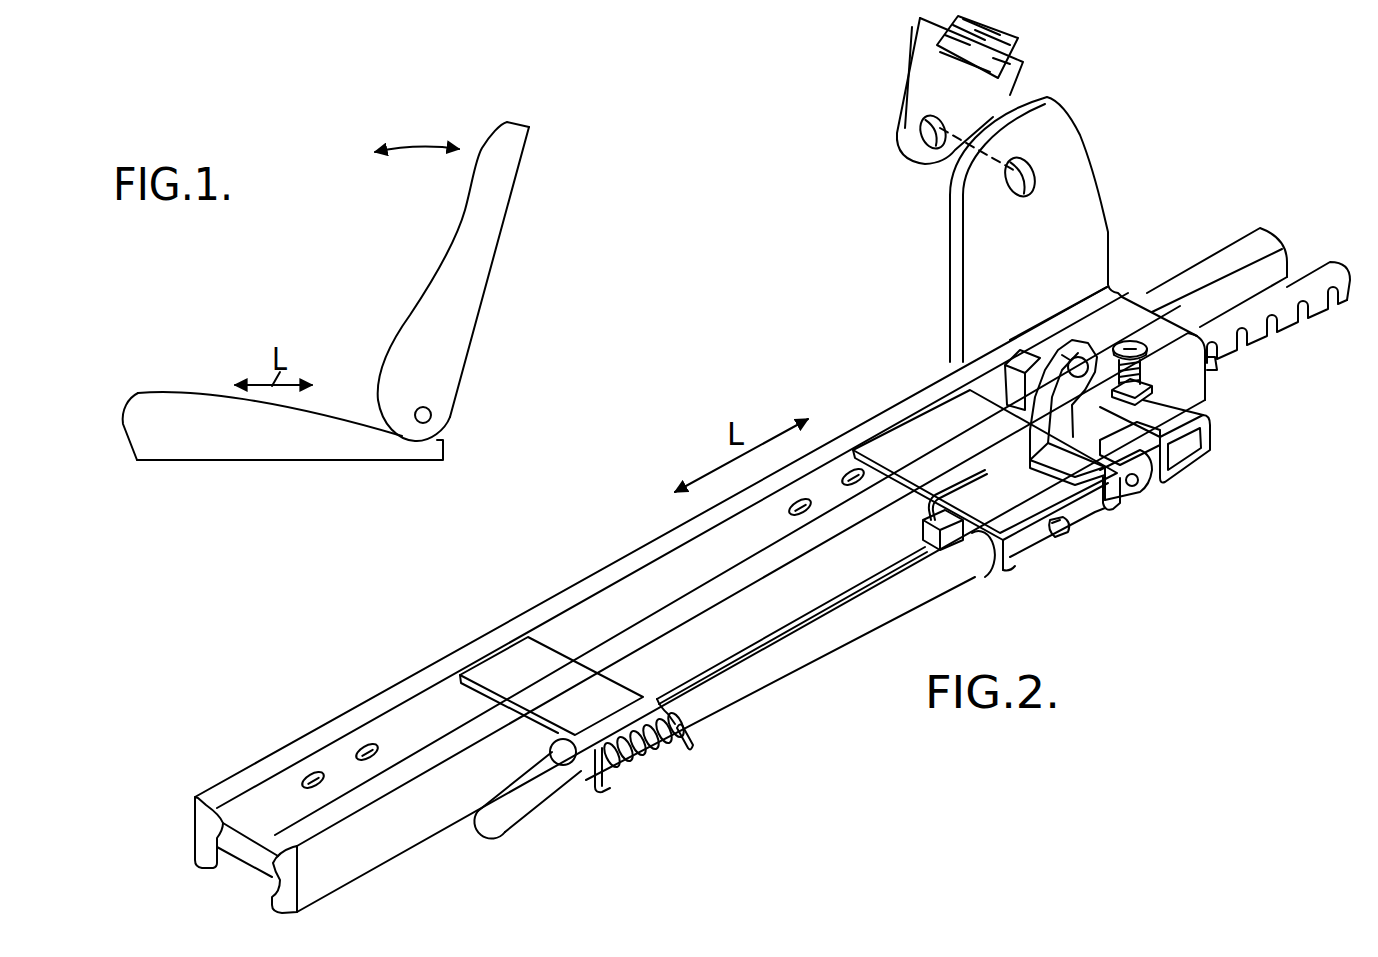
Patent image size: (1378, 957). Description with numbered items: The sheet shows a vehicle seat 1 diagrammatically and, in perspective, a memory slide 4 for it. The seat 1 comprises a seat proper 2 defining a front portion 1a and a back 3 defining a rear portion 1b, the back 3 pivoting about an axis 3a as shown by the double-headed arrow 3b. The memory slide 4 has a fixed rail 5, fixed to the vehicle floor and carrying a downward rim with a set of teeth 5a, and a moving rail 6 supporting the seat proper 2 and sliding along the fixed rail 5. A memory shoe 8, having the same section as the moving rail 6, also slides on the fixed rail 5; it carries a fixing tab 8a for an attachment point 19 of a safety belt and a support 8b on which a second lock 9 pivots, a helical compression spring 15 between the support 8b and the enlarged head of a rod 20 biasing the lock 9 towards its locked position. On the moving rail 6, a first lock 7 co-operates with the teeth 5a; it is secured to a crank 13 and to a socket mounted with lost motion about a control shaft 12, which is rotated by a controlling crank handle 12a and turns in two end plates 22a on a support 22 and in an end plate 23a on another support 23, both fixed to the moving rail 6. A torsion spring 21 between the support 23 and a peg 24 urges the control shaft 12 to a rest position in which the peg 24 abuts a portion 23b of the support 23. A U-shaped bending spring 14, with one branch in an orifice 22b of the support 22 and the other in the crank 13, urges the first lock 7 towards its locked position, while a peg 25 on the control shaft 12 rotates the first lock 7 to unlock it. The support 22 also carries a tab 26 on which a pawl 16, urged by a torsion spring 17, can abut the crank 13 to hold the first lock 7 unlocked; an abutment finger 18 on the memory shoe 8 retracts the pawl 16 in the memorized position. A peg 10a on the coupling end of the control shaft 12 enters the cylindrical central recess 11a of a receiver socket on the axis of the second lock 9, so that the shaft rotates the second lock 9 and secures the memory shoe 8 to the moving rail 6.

In FIG. 1, the vehicle seat 1 is at (331, 307).
In FIG. 1, the front portion of the seat 1a is at (134, 389).
In FIG. 1, the rear portion of the seat 1b is at (486, 308).
In FIG. 1, the seat proper 2 is at (323, 462).
In FIG. 1, the back 3 is at (465, 274).
In FIG. 1, the axis 3a is at (431, 416).
In FIG. 1, the double-headed arrow 3b is at (417, 129).
In FIG. 2, the memory slide 4 is at (1004, 584).
In FIG. 2, the fixed rail 5 is at (1262, 286).
In FIG. 2, the set of teeth 5a is at (1303, 317).
In FIG. 2, the moving rail 6 is at (647, 555).
In FIG. 2, the first lock 7 is at (1103, 507).
In FIG. 2, the memory shoe 8 is at (1089, 262).
In FIG. 2, the fixing tab 8a is at (985, 212).
In FIG. 2, the support 8b is at (1153, 400).
In FIG. 2, the second lock 9 is at (1188, 442).
In FIG. 2, the peg 10a is at (1160, 453).
In FIG. 2, the cylindrical central recess 11a is at (1157, 447).
In FIG. 2, the control shaft 12 is at (765, 668).
In FIG. 2, the controlling crank handle 12a is at (510, 803).
In FIG. 2, the crank 13 is at (1150, 477).
In FIG. 2, the U-shaped bending spring 14 is at (950, 478).
In FIG. 2, the helical compression spring 15 is at (1152, 370).
In FIG. 2, the pawl 16 is at (1020, 398).
In FIG. 2, the torsion spring 17 is at (1040, 380).
In FIG. 2, the abutment finger 18 is at (1197, 427).
In FIG. 2, the attachment point of a safety belt 19 is at (889, 101).
In FIG. 2, the rod 20 is at (1132, 343).
In FIG. 2, the torsion spring 21 is at (633, 765).
In FIG. 2, the support 22 is at (1005, 525).
In FIG. 2, the end plates 22a is at (1120, 493).
In FIG. 2, the orifice 22b is at (1003, 518).
In FIG. 2, the support 23 is at (513, 663).
In FIG. 2, the end plate 23a is at (580, 790).
In FIG. 2, the portion of the support 23b is at (685, 730).
In FIG. 2, the peg 24 is at (680, 693).
In FIG. 2, the peg 25 is at (1073, 530).
In FIG. 2, the tab 26 is at (1048, 430).